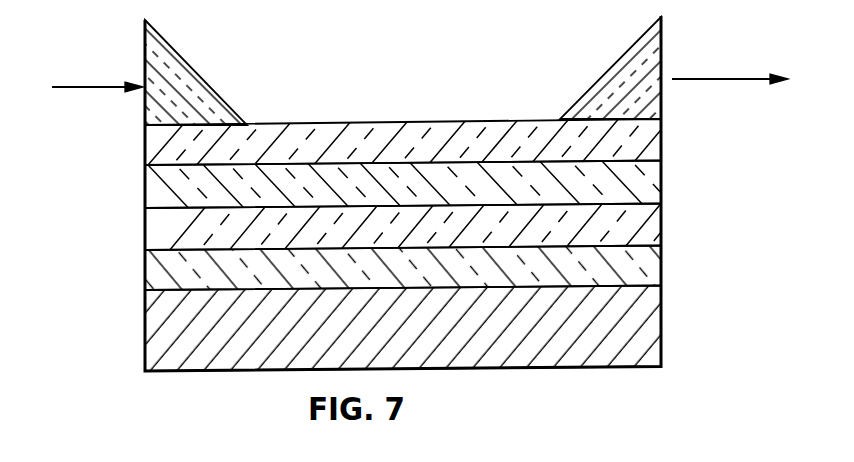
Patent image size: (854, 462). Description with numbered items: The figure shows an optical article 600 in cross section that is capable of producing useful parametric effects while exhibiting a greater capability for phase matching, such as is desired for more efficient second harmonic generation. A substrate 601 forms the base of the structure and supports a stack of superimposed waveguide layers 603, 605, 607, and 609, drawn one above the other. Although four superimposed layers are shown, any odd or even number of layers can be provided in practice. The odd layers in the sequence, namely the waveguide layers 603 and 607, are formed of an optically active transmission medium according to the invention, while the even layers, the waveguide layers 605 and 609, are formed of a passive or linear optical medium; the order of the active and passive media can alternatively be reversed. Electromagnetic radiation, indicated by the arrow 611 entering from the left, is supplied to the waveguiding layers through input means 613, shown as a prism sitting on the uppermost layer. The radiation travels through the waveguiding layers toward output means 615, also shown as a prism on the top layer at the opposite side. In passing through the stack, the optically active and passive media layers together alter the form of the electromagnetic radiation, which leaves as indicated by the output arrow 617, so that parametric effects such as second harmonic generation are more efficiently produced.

The optical article 600 is at (112, 347).
The substrate 601 is at (662, 322).
The waveguide layer 603 is at (662, 267).
The waveguide layer 605 is at (145, 233).
The waveguide layer 607 is at (662, 180).
The waveguide layer 609 is at (145, 146).
The arrow 611 is at (84, 84).
The input means 613 is at (197, 70).
The output means 615 is at (615, 62).
The output arrow 617 is at (727, 78).